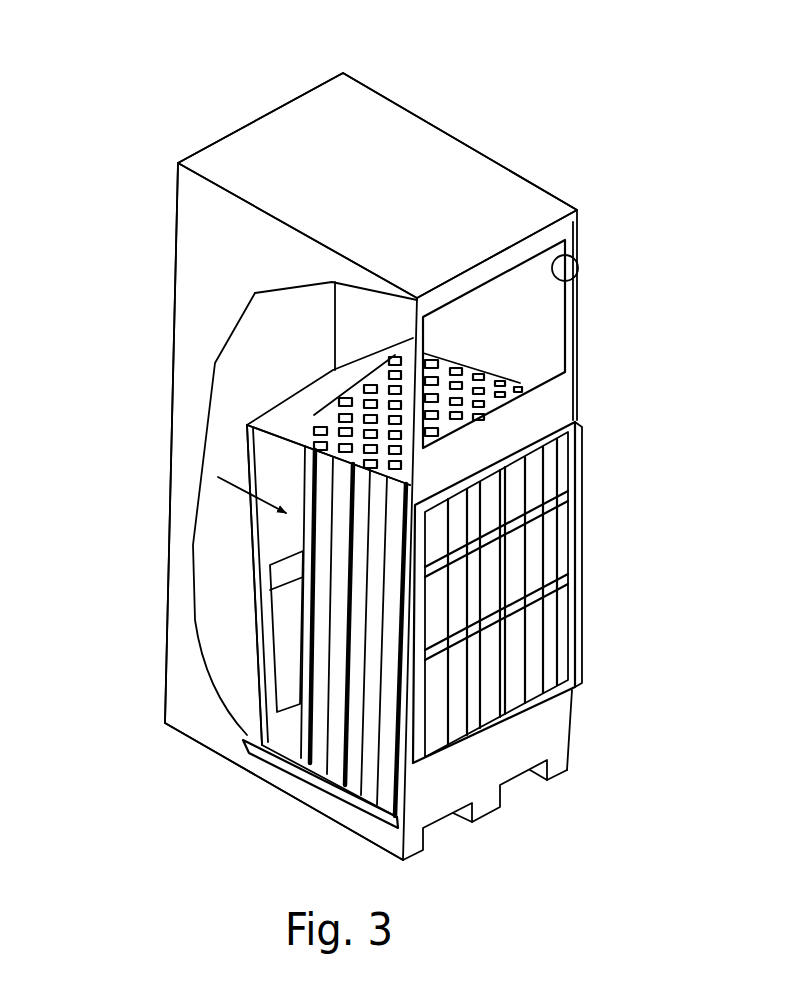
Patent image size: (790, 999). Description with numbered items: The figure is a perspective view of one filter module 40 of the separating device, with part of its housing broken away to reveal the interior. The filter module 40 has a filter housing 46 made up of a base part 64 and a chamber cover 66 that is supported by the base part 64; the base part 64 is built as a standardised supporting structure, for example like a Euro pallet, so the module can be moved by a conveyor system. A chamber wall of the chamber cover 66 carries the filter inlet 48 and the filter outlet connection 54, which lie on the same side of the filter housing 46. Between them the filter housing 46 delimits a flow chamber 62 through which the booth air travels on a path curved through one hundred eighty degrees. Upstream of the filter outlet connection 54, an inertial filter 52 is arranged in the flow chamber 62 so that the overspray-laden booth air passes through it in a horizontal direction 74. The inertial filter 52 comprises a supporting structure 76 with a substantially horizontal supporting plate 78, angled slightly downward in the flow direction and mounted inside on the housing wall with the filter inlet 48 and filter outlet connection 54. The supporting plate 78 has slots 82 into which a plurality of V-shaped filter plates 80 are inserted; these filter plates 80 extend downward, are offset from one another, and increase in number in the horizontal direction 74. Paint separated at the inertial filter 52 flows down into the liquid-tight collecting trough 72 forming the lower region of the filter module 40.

The filter module 40 is at (436, 120).
The filter housing 46 is at (498, 182).
The filter inlet 48 is at (570, 280).
The inertial filter 52 is at (315, 642).
The filter outlet connection 54 is at (583, 467).
The flow chamber 62 is at (296, 342).
The base part 64 is at (326, 795).
The chamber cover 66 is at (188, 281).
The collecting trough 72 is at (218, 641).
The horizontal direction 74 is at (242, 491).
The supporting structure 76 is at (245, 454).
The supporting plate 78 is at (268, 422).
The filter plates 80 is at (338, 428).
The slots 82 is at (336, 440).